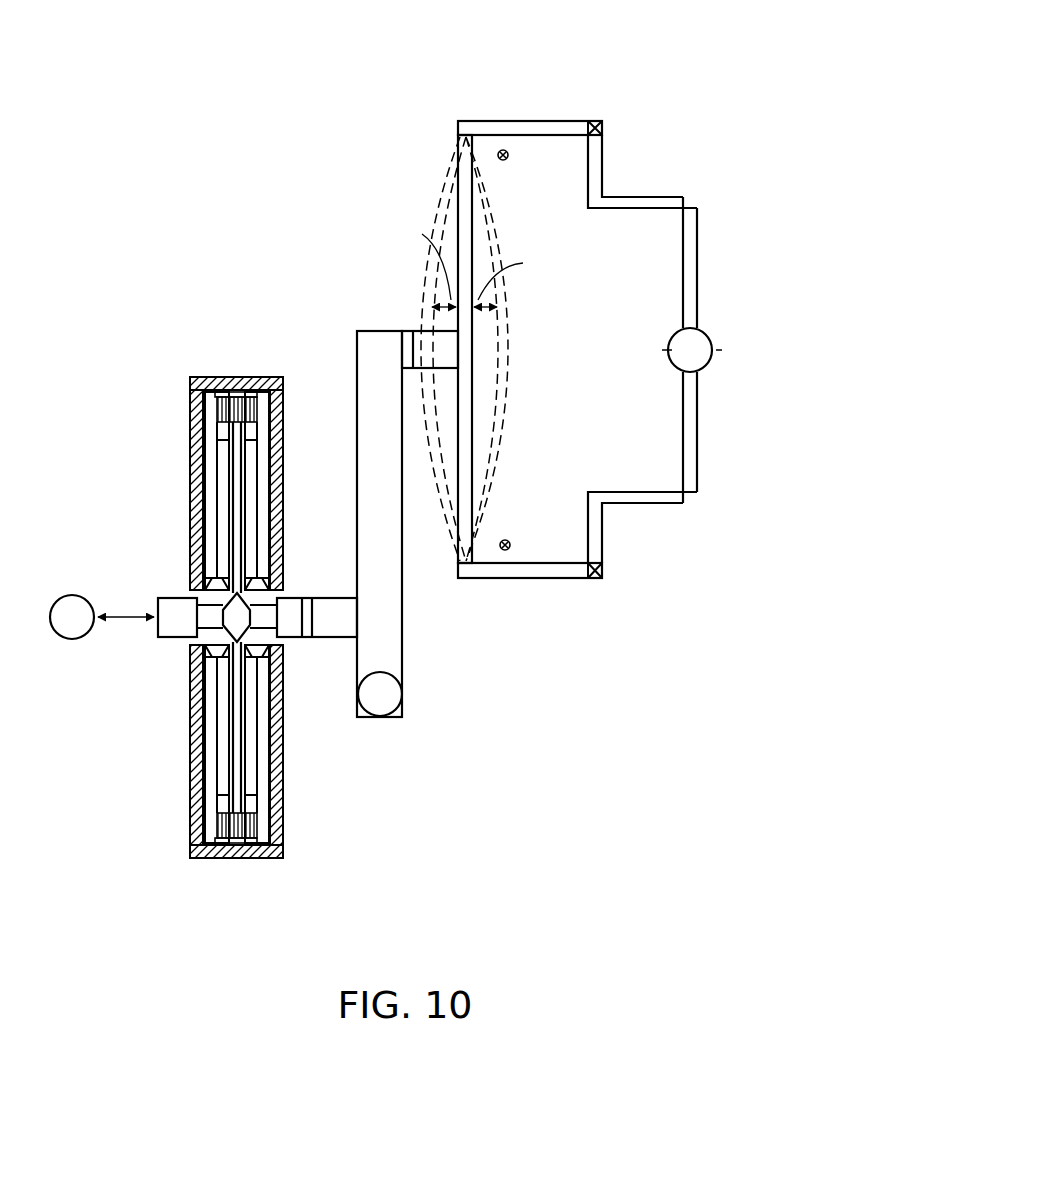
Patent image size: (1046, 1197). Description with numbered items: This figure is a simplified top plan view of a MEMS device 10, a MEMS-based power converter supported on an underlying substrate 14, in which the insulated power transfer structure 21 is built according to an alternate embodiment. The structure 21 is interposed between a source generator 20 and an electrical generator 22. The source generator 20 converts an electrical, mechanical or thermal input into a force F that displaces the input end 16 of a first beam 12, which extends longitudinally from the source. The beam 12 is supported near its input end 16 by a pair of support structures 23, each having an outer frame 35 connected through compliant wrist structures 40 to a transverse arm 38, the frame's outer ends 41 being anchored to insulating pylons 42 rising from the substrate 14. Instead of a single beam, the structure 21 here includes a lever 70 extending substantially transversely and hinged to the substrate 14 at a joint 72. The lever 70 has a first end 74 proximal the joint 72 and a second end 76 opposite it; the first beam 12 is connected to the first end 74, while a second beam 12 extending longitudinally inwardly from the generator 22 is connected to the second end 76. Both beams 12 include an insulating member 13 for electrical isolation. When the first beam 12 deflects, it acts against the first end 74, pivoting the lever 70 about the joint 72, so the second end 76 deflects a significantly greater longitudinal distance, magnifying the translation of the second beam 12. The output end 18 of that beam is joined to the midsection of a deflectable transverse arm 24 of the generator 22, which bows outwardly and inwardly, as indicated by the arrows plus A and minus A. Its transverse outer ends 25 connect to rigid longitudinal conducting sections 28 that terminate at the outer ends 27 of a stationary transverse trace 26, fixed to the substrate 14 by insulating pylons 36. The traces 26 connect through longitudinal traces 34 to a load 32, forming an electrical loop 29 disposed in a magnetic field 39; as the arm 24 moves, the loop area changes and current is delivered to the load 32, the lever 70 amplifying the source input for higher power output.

The MEMS device 10 is at (732, 92).
The beam 12 is at (444, 372).
The insulating member 13 is at (413, 331).
The substrate 14 is at (480, 617).
The input end 16 is at (178, 596).
The output end 18 is at (462, 347).
The source generator 20 is at (58, 603).
The power transfer structure 21 is at (366, 243).
The electrical generator 22 is at (548, 84).
The support structure 23 is at (189, 397).
The deflectable transverse arm 24 is at (472, 242).
The transverse outer end 25 is at (458, 135).
The stationary trace 26 is at (603, 165).
The transverse outer end 27 is at (602, 127).
The electrically conducting section 28 is at (557, 121).
The electrical loop 29 is at (490, 117).
The load 32 is at (705, 333).
The longitudinal electrically conducting trace 34 is at (665, 197).
The outer frame 35 is at (190, 458).
The insulating pylon 36 is at (604, 127).
The transverse arm 38 is at (240, 470).
The magnetic field 39 is at (509, 155).
The wrist structure 40 is at (228, 392).
The outer end 41 is at (210, 375).
The insulating pylon 42 is at (238, 395).
The lever 70 is at (357, 555).
The joint 72 is at (402, 712).
The first end 74 is at (352, 660).
The second end 76 is at (357, 335).